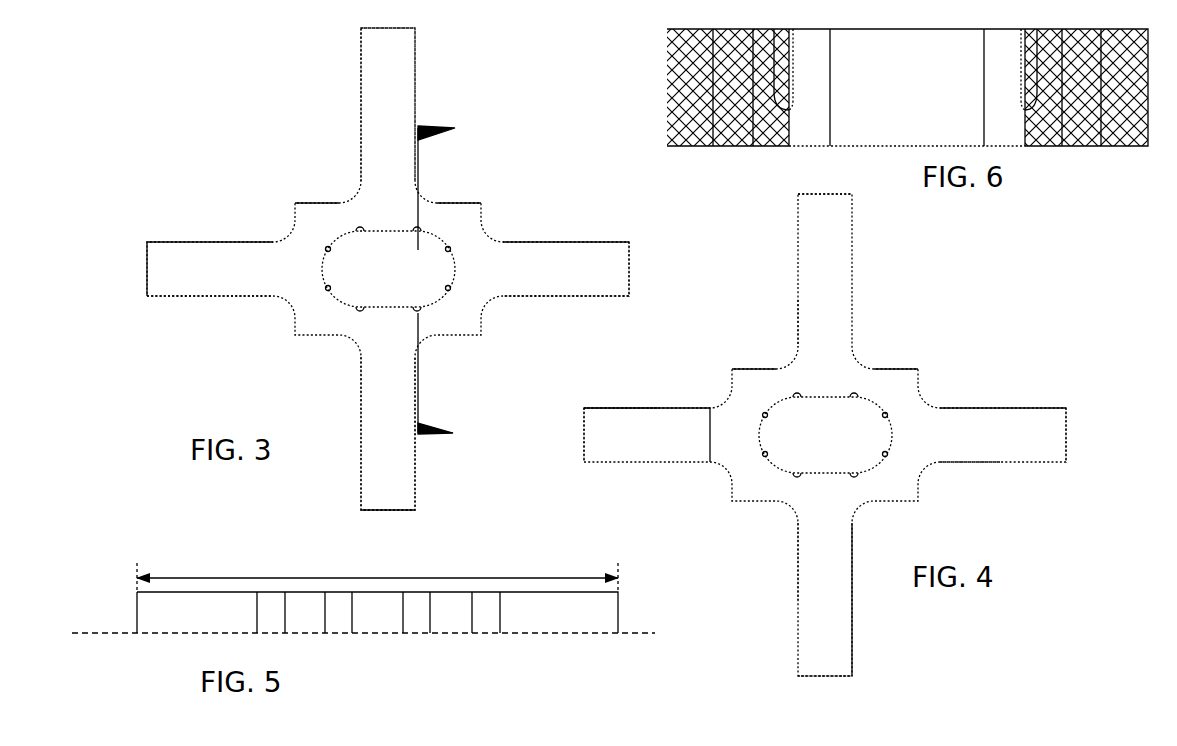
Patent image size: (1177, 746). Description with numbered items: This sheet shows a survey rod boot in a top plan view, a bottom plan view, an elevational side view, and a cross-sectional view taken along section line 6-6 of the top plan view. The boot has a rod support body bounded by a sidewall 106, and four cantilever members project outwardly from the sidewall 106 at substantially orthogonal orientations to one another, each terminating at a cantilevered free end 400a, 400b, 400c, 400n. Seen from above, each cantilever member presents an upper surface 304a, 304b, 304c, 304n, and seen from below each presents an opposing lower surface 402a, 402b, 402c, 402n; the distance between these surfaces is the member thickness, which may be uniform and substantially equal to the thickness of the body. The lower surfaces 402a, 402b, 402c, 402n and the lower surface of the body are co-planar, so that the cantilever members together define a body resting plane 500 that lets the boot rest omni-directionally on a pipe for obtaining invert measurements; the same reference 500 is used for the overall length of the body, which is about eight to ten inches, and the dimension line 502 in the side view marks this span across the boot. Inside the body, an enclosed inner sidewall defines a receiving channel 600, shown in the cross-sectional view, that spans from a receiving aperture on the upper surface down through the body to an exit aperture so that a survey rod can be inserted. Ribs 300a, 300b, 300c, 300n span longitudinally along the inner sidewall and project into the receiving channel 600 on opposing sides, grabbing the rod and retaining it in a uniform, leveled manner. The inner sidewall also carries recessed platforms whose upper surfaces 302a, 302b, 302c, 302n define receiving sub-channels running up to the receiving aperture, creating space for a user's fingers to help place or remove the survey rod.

In FIG. 3, the upper surface of cantilever member 304a is at (372, 172).
In FIG. 3, the upper surface of cantilever member 304b is at (200, 272).
In FIG. 3, the upper surface of cantilever member 304c is at (393, 490).
In FIG. 3, the upper surface of cantilever member 304n is at (578, 262).
In FIG. 3, the upper surface of recessed platform 302a is at (357, 225).
In FIG. 3, the upper surface of recessed platform 302b is at (360, 312).
In FIG. 3, the upper surface of recessed platform 302c is at (418, 222).
In FIG. 3, the upper surface of recessed platform 302n is at (415, 312).
In FIG. 3, the rib 300a is at (328, 249).
In FIG. 3, the rib 300b is at (328, 288).
In FIG. 3, the rib 300c is at (448, 249).
In FIG. 3, the rib 300n is at (448, 288).
In FIG. 3, the section line 6-6 is at (418, 128).
In FIG. 4, the sidewall 106 is at (885, 415).
In FIG. 4, the cantilevered free end 400a is at (810, 672).
In FIG. 4, the cantilevered free end 400b is at (1067, 432).
In FIG. 4, the cantilevered free end 400c is at (822, 196).
In FIG. 4, the cantilevered free end 400n is at (590, 450).
In FIG. 4, the lower surface of cantilever member 402a is at (828, 590).
In FIG. 4, the lower surface of cantilever member 402b is at (632, 425).
In FIG. 4, the lower surface of cantilever member 402c is at (828, 326).
In FIG. 4, the lower surface of cantilever member 402n is at (957, 425).
In FIG. 5, the body resting plane 500 is at (90, 632).
In FIG. 5, the length 502 is at (226, 578).
In FIG. 6, the receiving channel 600 is at (870, 82).